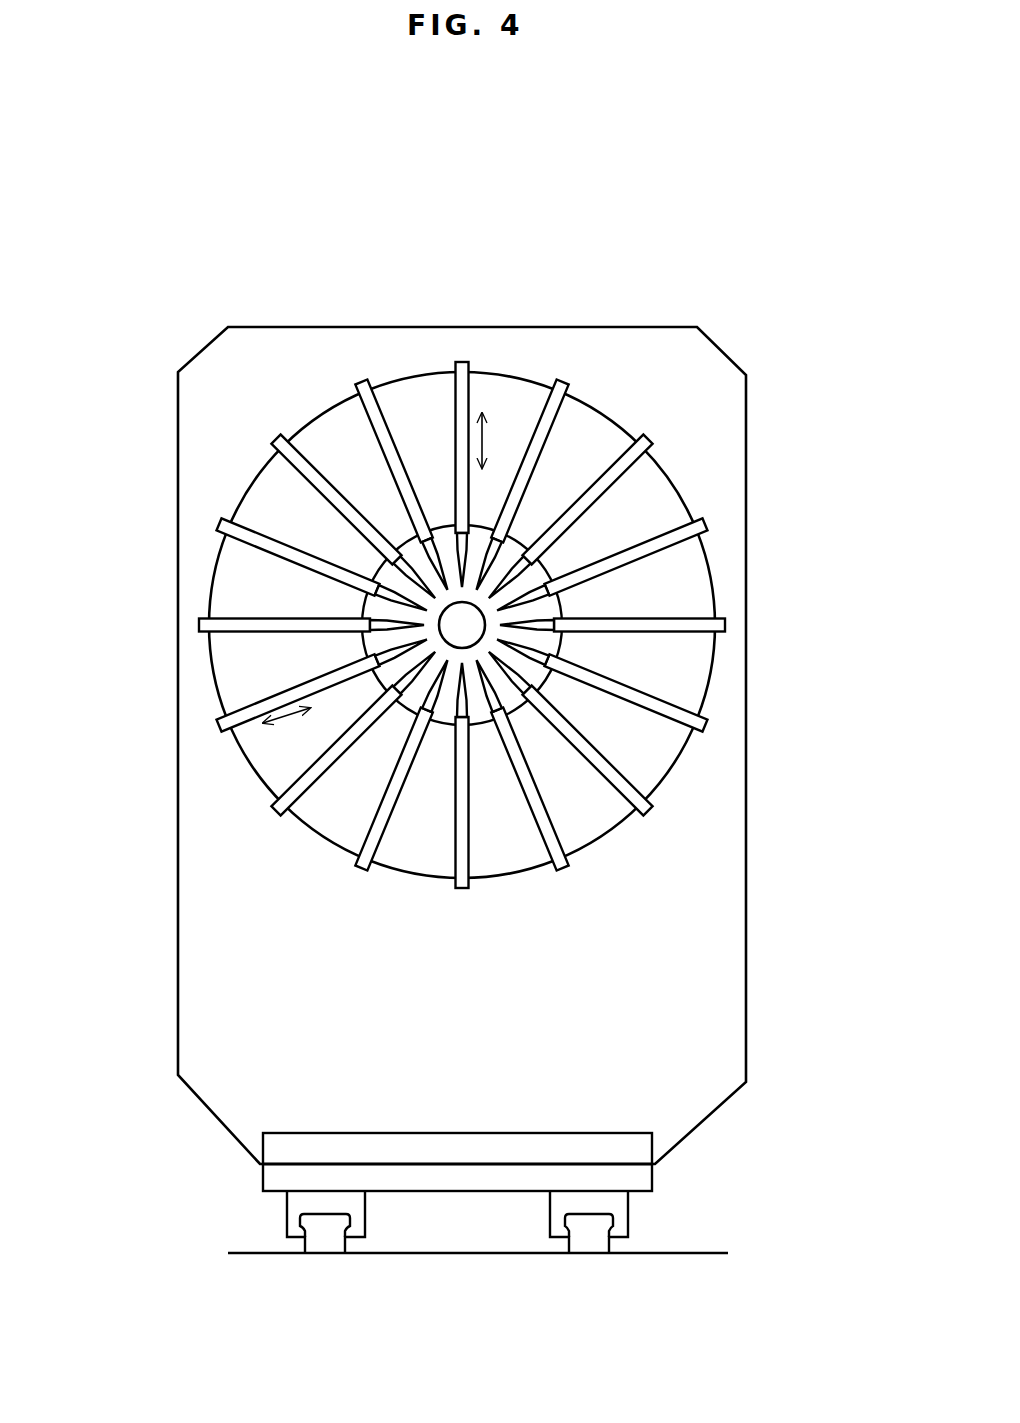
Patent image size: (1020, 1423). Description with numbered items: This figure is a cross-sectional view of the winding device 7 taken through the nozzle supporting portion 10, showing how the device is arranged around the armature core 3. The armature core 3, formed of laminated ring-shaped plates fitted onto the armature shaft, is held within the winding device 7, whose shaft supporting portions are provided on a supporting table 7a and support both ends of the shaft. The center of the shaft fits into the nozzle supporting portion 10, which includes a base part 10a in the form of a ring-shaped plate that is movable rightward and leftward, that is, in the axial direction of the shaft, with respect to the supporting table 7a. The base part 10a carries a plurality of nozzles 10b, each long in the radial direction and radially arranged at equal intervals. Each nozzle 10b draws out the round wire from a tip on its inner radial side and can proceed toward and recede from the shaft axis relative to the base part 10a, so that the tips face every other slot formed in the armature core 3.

The rotation shaft 3 is at (458, 624).
The body 7 is at (733, 296).
The support plate 7a is at (628, 1022).
The rotary arm unit 10 is at (468, 508).
The disc 10a is at (574, 446).
The arm bar 10b is at (594, 494).